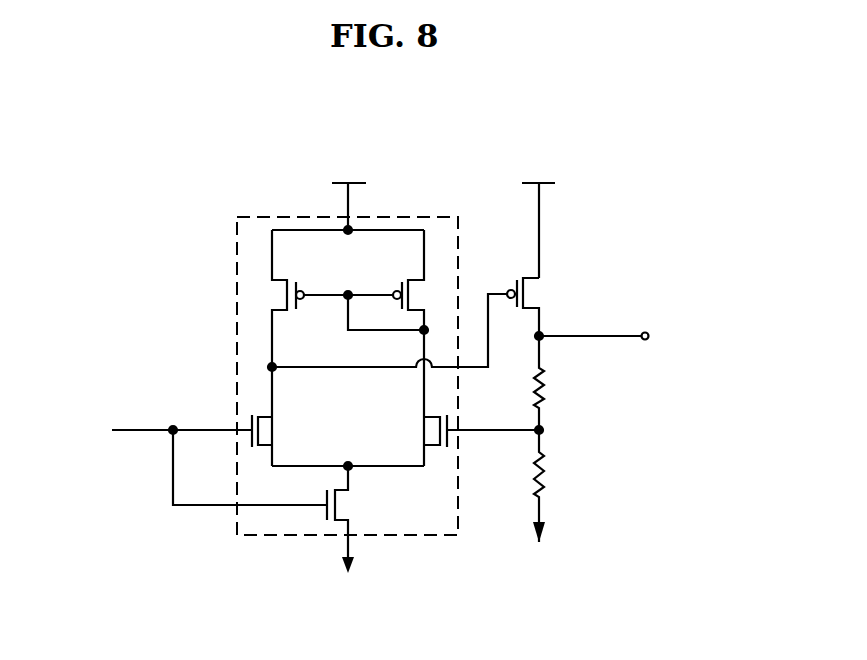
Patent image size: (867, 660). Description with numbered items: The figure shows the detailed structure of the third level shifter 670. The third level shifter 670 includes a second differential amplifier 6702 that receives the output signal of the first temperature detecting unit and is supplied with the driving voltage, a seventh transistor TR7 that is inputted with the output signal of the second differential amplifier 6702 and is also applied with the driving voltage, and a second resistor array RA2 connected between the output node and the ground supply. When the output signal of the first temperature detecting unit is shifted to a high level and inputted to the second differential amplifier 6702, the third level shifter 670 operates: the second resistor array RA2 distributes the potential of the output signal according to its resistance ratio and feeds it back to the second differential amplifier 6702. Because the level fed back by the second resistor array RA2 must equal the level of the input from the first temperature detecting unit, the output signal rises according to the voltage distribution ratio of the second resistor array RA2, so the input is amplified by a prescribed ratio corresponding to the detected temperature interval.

The third level shifter 670 is at (690, 105).
The second differential amplifier 6702 is at (457, 252).
The seventh transistor TR7 is at (541, 278).
The second resistor array RA2 is at (562, 397).